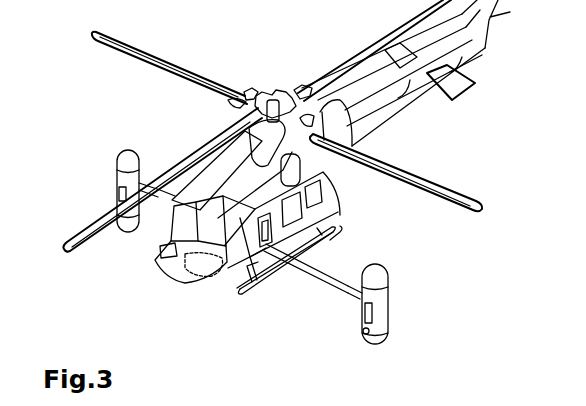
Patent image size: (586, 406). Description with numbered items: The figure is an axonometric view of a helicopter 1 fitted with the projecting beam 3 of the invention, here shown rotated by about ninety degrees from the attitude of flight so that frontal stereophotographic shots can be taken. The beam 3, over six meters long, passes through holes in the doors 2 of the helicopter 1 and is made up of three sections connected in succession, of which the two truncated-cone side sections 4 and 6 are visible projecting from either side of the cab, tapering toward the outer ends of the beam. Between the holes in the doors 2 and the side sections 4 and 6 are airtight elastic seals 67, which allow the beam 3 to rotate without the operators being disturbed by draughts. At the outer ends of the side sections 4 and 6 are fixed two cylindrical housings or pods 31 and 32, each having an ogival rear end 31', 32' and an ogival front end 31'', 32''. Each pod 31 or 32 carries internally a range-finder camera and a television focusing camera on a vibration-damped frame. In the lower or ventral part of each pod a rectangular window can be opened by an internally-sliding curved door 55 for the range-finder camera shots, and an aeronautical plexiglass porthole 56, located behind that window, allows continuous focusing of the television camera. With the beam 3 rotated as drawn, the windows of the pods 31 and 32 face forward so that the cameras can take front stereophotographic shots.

The helicopter 1 is at (286, 147).
The doors 2 is at (312, 224).
The projecting beam 3 is at (323, 290).
The side section 4 is at (320, 278).
The side section 6 is at (170, 210).
The elastic seals 67 is at (247, 266).
The cylindrical housing or pod 31 is at (398, 304).
The ogival rear end 31' is at (397, 350).
The ogival front end 31'' is at (393, 259).
The cylindrical housing or pod 32 is at (113, 182).
The ogival rear end 32' is at (118, 238).
The ogival front end 32'' is at (143, 146).
The internally-sliding curved door 55 is at (366, 320).
The aeronautical plexiglass porthole 56 is at (363, 331).